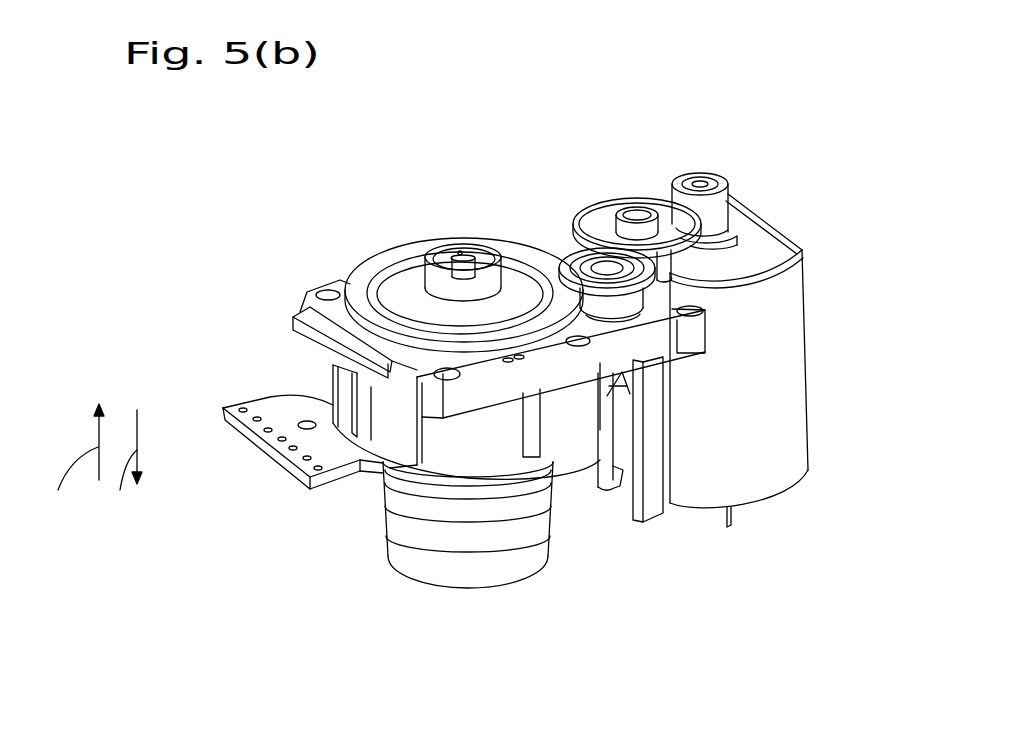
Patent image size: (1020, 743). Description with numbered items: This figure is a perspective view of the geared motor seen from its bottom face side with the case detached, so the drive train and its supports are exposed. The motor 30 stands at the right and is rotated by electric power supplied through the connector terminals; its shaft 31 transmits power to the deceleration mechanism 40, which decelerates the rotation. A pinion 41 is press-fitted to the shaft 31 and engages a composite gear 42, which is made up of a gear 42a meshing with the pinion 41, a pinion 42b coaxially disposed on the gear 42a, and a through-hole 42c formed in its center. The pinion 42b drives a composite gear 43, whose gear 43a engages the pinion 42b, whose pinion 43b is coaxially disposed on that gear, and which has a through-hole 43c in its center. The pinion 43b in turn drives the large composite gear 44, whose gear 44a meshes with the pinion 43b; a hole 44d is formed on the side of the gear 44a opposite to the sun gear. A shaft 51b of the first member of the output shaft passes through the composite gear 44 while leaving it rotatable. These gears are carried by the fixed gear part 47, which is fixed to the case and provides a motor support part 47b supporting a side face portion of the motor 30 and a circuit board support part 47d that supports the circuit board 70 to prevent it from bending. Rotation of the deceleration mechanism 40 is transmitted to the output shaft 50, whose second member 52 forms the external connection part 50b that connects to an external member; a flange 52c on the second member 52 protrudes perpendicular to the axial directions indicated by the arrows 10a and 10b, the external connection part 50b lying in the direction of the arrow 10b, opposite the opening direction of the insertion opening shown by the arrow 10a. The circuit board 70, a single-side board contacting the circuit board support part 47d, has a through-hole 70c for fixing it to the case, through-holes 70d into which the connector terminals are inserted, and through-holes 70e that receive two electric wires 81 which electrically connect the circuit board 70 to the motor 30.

The arrow 10a is at (64, 470).
The arrow 10b is at (118, 473).
The motor 30 is at (787, 316).
The shaft 31 is at (718, 186).
The deceleration mechanism 40 is at (498, 146).
The pinion 41 is at (701, 172).
The composite gear 42 is at (588, 192).
The gear 42a is at (621, 203).
The pinion 42b is at (676, 272).
The through-hole 42c is at (639, 214).
The composite gear 43 is at (541, 241).
The gear 43a is at (650, 300).
The pinion 43b is at (632, 322).
The through-hole 43c is at (580, 253).
The composite gear 44 is at (354, 221).
The gear 44a is at (358, 271).
The hole 44d is at (478, 256).
The fixed gear part 47 is at (296, 327).
The motor support part 47b is at (653, 473).
The circuit board support part 47d is at (432, 456).
The output shaft 50 is at (378, 573).
The external connection part 50b is at (533, 561).
The shaft 51b is at (453, 258).
The second member 52 is at (464, 573).
The flange 52c is at (487, 501).
The circuit board 70 is at (313, 491).
The through-hole 70c is at (303, 420).
The through-holes 70d is at (318, 470).
The through-holes 70e is at (607, 399).
The electric wires 81 is at (615, 472).